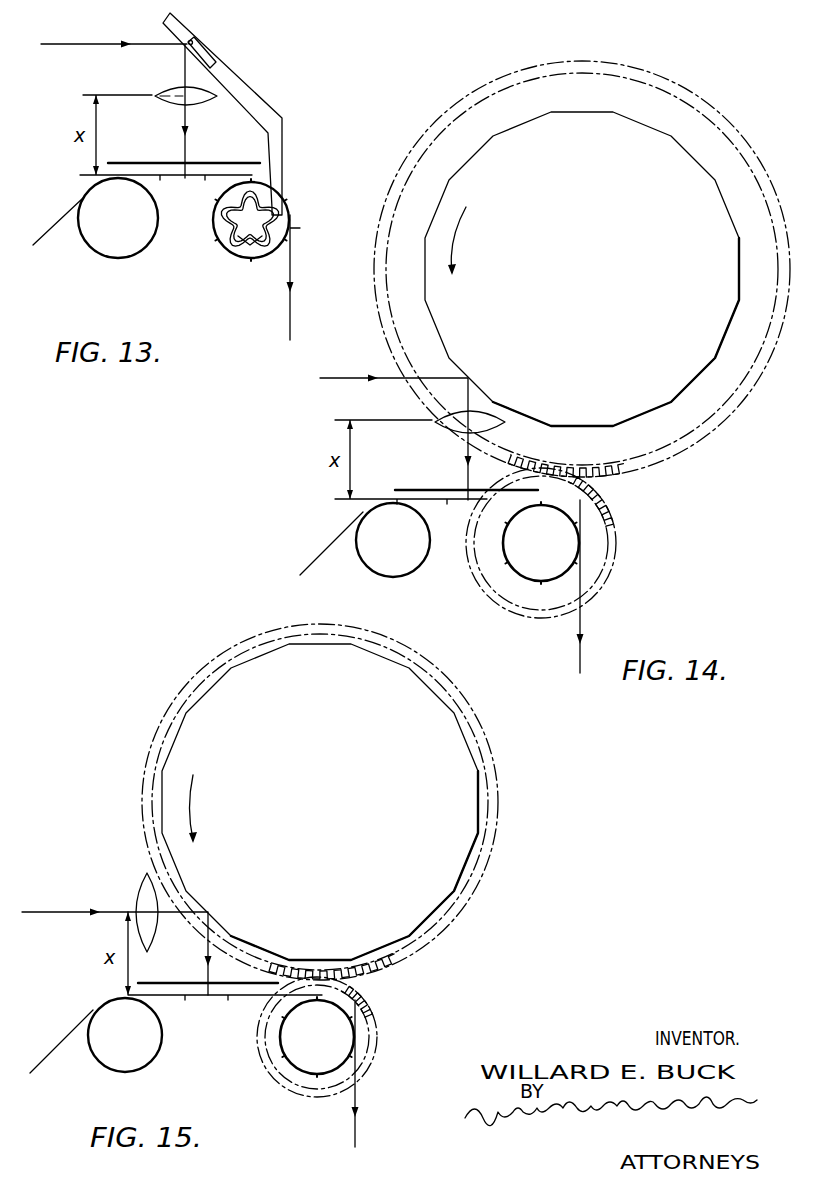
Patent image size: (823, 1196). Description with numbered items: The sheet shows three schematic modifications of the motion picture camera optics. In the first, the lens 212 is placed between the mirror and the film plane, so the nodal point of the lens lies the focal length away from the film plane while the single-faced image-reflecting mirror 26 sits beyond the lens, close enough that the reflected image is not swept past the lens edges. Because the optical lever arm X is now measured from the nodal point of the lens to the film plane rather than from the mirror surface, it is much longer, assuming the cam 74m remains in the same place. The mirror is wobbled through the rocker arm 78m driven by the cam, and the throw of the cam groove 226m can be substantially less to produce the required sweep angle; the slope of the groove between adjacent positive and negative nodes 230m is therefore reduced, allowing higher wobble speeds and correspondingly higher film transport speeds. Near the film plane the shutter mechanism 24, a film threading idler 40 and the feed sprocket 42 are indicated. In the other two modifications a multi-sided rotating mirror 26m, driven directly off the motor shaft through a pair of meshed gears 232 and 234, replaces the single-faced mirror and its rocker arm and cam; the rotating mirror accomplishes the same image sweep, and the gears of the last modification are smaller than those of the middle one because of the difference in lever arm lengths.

In FIG. 13, the image-reflecting mirror 26 is at (165, 21).
In FIG. 13, the rocker arm 78m is at (270, 112).
In FIG. 13, the lens 212 is at (170, 104).
In FIG. 14, the lens 212 is at (452, 426).
In FIG. 15, the lens 212 is at (143, 889).
In FIG. 13, the double-disk shutter mechanism 24 is at (210, 162).
In FIG. 14, the double-disk shutter mechanism 24 is at (407, 489).
In FIG. 13, the film threading idler 40 is at (95, 218).
In FIG. 14, the film threading idler 40 is at (365, 540).
In FIG. 15, the film threading idler 40 is at (96, 1035).
In FIG. 13, the cam 74m is at (288, 228).
In FIG. 13, the positive and negative nodes 230m is at (226, 206).
In FIG. 13, the cam groove 226m is at (233, 243).
In FIG. 13, the feed sprocket 42 is at (222, 248).
In FIG. 14, the feed sprocket 42 is at (532, 580).
In FIG. 15, the feed sprocket 42 is at (300, 1068).
In FIG. 14, the multi-sided rotating mirror 26m is at (537, 124).
In FIG. 15, the multi-sided rotating mirror 26m is at (192, 742).
In FIG. 14, the gear 232 is at (609, 516).
In FIG. 15, the gear 232 is at (363, 998).
In FIG. 14, the gear 234 is at (627, 472).
In FIG. 15, the gear 234 is at (397, 962).